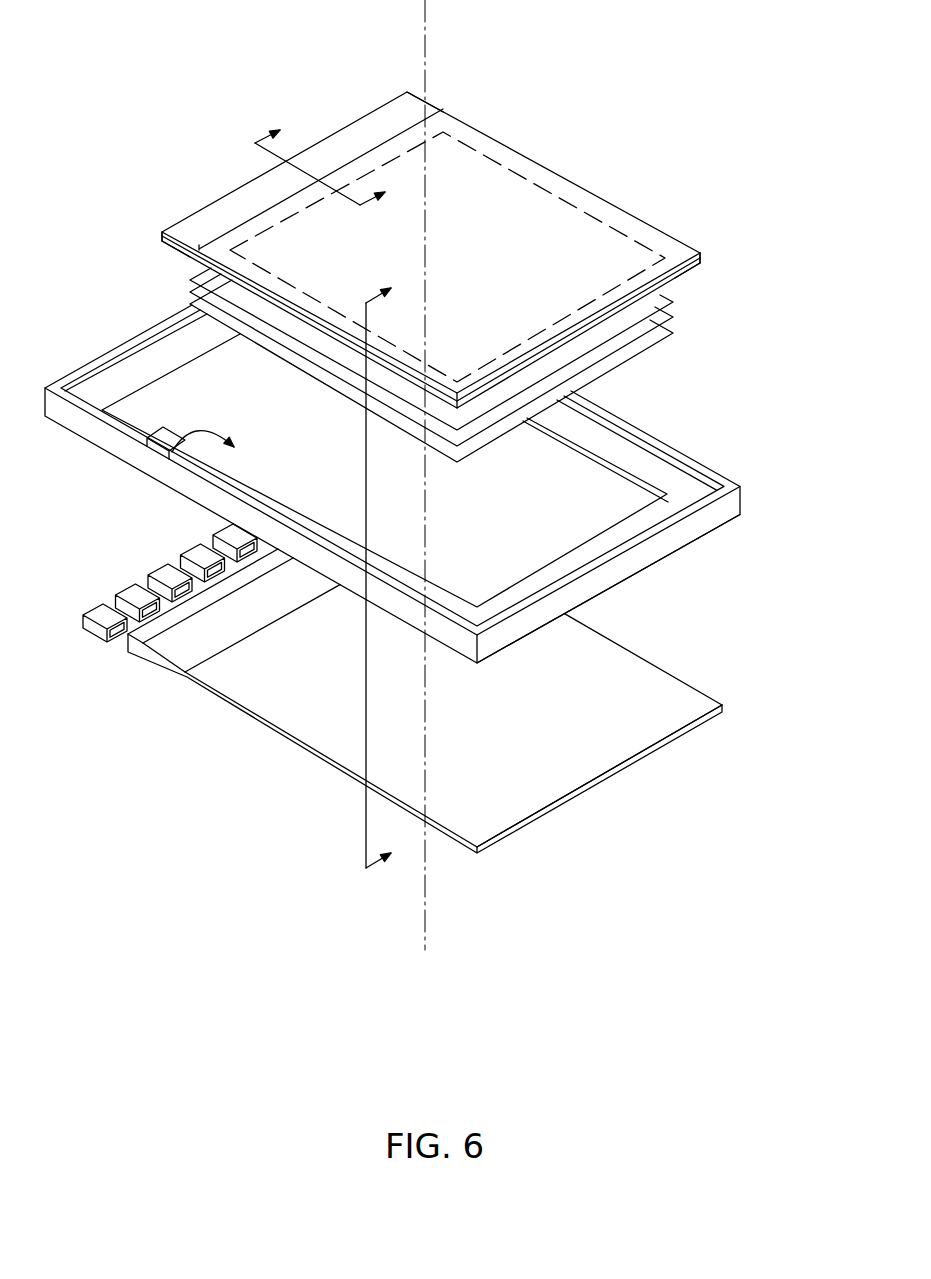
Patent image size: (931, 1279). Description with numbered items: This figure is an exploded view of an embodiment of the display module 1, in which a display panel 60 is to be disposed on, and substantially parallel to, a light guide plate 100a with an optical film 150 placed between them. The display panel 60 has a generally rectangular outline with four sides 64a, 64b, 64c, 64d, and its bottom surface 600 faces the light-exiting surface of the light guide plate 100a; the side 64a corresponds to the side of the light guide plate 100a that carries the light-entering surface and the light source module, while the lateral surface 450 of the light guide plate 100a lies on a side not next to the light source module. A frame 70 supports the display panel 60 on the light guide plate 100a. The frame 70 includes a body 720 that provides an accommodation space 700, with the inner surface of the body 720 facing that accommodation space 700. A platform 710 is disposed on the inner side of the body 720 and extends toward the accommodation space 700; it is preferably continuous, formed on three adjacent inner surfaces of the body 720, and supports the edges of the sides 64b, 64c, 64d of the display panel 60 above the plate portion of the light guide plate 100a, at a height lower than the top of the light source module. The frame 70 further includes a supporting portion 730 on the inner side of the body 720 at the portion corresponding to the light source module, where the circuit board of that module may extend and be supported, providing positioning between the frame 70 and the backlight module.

The display module 1 is at (148, 24).
The display panel 60 is at (449, 235).
The side of the display panel 64a is at (358, 117).
The side of the display panel 64b is at (165, 238).
The side of the display panel 64c is at (700, 258).
The side of the display panel 64d is at (432, 103).
The bottom surface of the display panel 600 is at (695, 265).
The optical film 150 is at (678, 298).
The frame 70 is at (428, 484).
The accommodation space 700 is at (163, 430).
The platform 710 is at (695, 490).
The body 720 is at (728, 485).
The supporting portion 730 is at (128, 372).
The light guide plate 100a is at (470, 701).
The lateral surface 450 is at (683, 729).